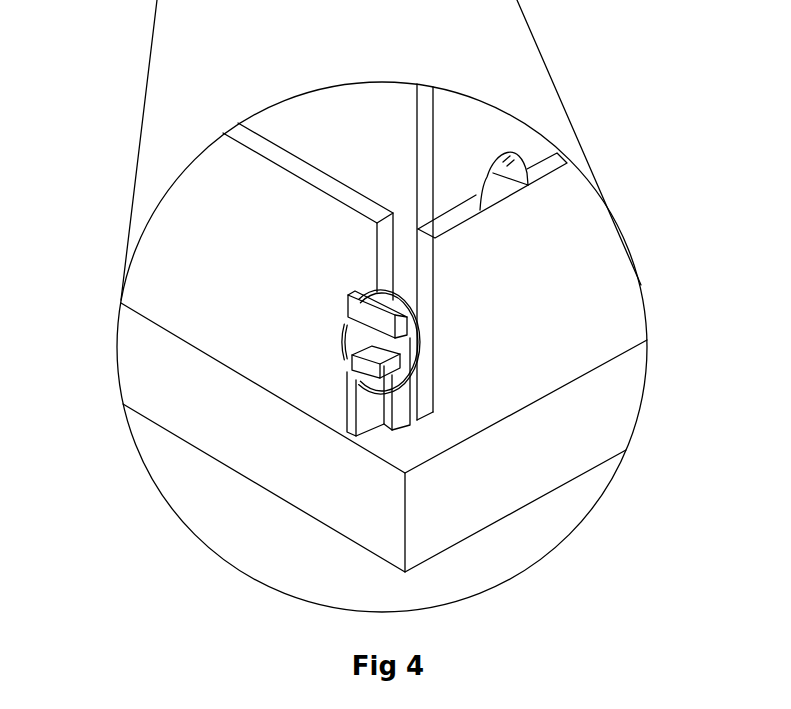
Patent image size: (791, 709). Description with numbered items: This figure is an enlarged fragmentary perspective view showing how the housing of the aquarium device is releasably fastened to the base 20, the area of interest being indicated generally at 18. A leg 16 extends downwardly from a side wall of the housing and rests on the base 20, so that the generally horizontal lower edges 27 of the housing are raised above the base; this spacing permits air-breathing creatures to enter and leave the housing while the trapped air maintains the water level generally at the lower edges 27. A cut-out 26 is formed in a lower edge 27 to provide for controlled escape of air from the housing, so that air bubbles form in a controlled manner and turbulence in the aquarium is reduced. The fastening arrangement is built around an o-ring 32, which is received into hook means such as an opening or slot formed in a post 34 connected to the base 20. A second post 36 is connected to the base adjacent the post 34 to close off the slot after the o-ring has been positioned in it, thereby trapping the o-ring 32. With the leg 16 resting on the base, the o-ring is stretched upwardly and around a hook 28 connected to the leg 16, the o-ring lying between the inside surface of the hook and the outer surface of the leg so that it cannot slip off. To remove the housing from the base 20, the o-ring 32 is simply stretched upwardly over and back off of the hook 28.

The leg 16 is at (375, 250).
The mounting assembly 18 is at (240, 315).
The base 20 is at (340, 537).
The cut-out 26 is at (493, 173).
The lower edge 27 is at (270, 160).
The hook 28 is at (347, 293).
The o-ring 32 is at (420, 340).
The post 34 is at (345, 398).
The post 36 is at (400, 430).